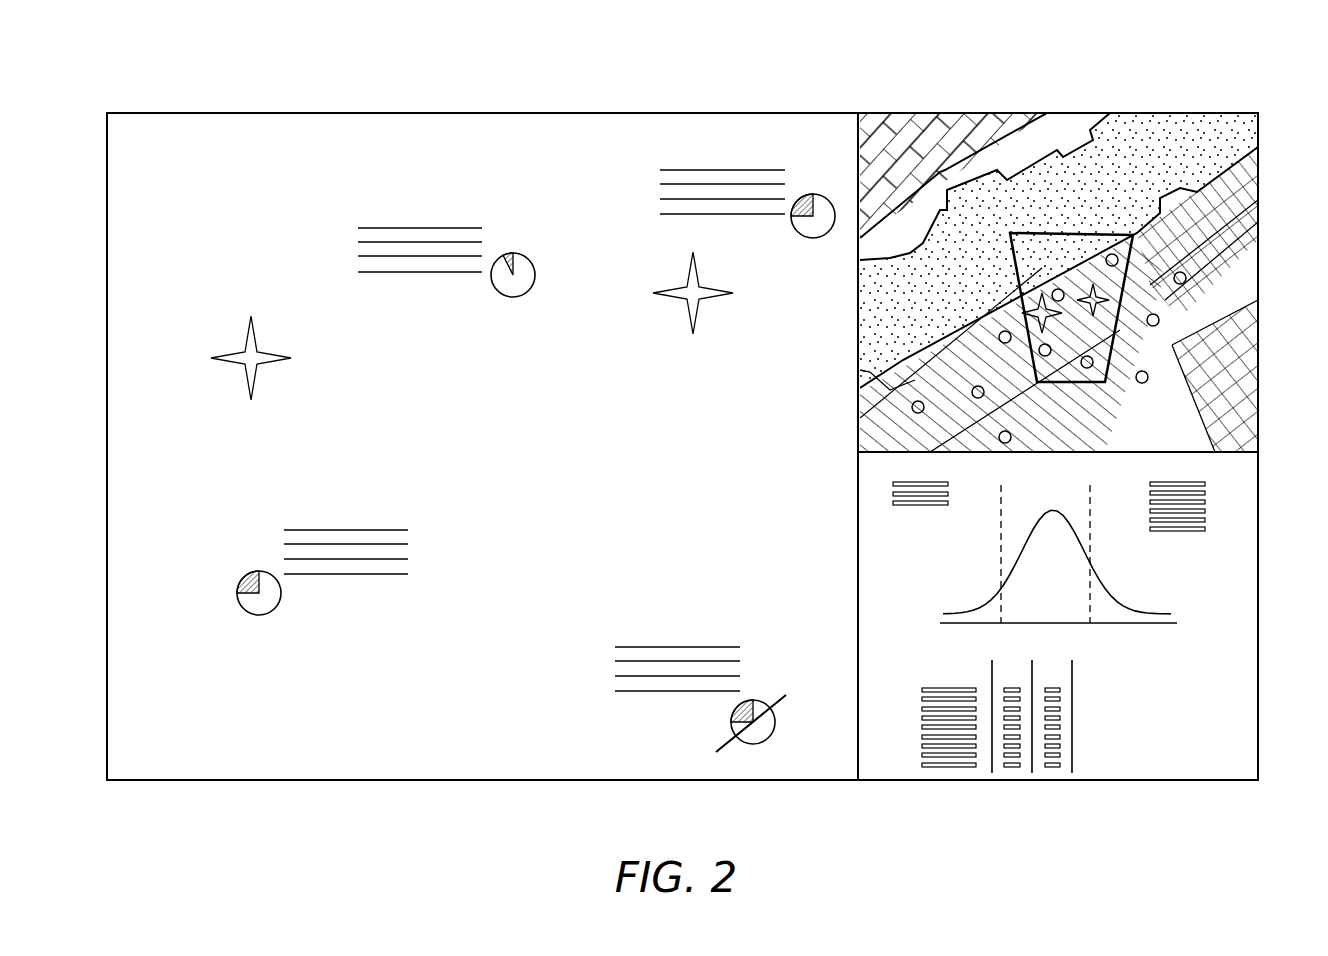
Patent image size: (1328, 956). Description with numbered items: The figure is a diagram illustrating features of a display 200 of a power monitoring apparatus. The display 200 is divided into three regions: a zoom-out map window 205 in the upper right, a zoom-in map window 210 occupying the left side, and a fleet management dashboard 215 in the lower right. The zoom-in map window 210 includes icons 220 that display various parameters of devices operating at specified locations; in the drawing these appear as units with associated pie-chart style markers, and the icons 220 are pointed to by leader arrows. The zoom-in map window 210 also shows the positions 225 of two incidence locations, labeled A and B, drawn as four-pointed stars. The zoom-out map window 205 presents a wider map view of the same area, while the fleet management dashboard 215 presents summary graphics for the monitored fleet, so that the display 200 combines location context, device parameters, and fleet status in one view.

The display 200 is at (1184, 52).
The zoom-out map window 205 is at (1246, 112).
The zoom-in map window 210 is at (784, 112).
The fleet management dashboard 215 is at (1261, 579).
The icons 220 is at (238, 625).
The positions 225 is at (677, 289).